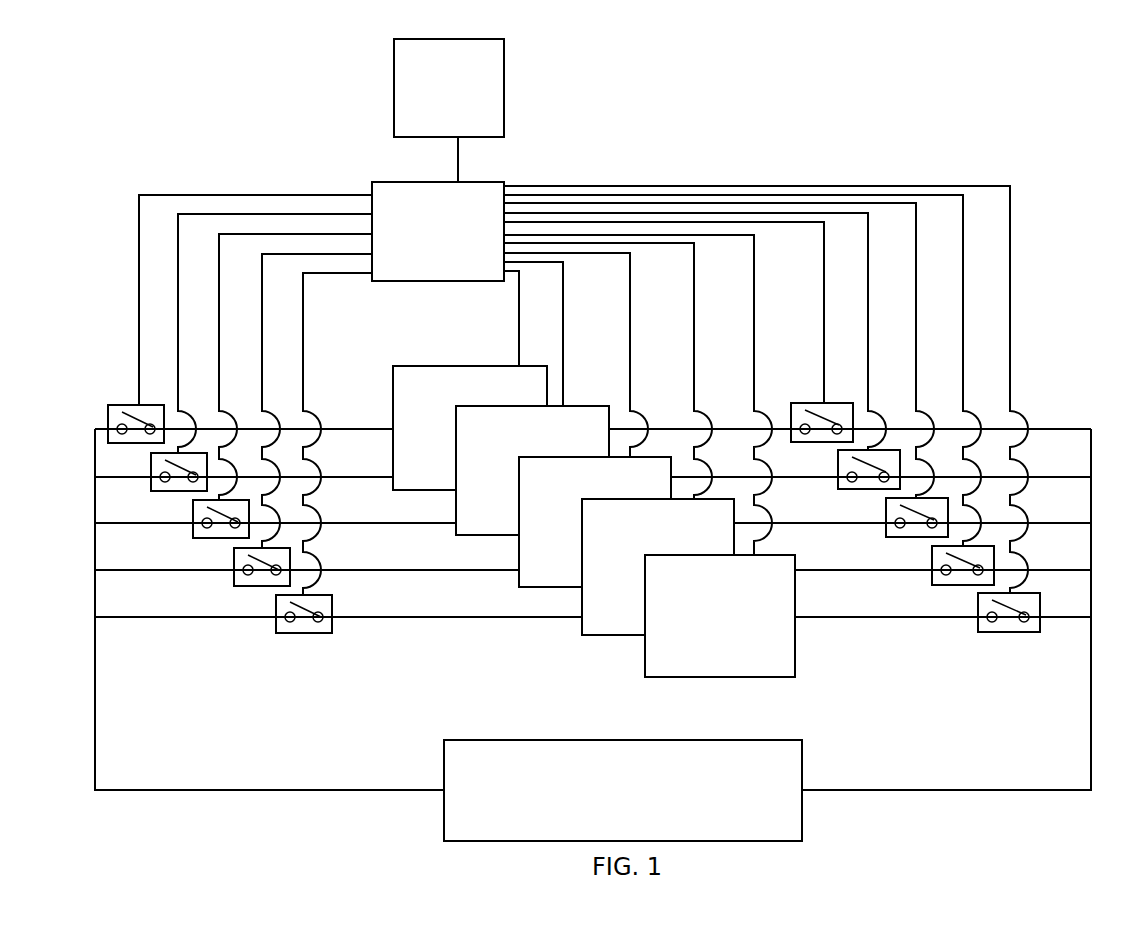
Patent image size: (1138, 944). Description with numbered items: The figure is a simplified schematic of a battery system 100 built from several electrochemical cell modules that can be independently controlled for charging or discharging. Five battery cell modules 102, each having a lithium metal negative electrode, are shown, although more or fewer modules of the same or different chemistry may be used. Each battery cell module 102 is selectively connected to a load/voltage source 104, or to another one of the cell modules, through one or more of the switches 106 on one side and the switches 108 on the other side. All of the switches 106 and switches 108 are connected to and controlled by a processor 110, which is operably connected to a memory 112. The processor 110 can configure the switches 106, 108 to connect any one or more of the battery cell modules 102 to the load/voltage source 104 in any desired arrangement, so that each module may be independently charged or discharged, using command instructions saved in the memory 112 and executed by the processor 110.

The battery system 100 is at (1022, 140).
The battery cell module 102 is at (447, 401).
The load/voltage source 104 is at (803, 772).
The switch 106 is at (107, 405).
The switch 108 is at (792, 403).
The processor 110 is at (504, 182).
The memory 112 is at (504, 60).